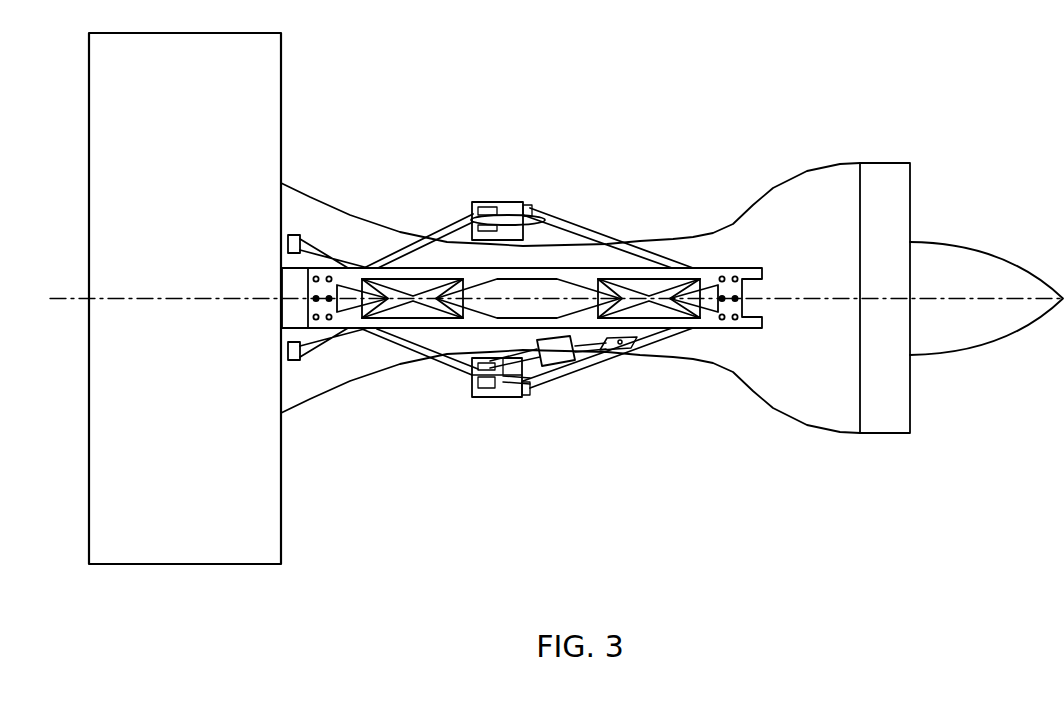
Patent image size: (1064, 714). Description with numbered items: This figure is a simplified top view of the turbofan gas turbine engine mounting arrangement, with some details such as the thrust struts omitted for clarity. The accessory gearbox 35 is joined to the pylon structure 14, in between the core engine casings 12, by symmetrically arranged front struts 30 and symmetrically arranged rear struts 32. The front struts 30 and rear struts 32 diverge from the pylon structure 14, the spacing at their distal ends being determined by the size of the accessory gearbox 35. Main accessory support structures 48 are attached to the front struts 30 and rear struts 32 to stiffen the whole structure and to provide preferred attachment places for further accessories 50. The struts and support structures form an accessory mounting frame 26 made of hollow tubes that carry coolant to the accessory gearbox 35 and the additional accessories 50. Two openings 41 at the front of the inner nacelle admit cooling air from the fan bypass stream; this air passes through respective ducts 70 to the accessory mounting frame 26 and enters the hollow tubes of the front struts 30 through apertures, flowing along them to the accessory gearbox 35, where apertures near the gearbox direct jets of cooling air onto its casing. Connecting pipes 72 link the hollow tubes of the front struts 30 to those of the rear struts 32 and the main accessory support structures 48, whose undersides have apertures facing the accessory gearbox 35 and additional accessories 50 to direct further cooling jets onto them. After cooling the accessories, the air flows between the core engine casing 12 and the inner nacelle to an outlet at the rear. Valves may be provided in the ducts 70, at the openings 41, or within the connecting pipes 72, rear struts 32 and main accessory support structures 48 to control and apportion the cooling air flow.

The core engine casing 12 is at (524, 257).
The pylon structure 14 is at (597, 262).
The accessory mounting frame 26 is at (398, 362).
The front strut 30 is at (447, 222).
The rear strut 32 is at (680, 257).
The accessory gearbox 35 is at (508, 376).
The opening in inner nacelle 41 is at (287, 241).
The main accessory support structure 48 is at (583, 345).
The additional accessory 50 is at (562, 375).
The duct 70 is at (313, 250).
The connecting pipe 72 is at (511, 215).